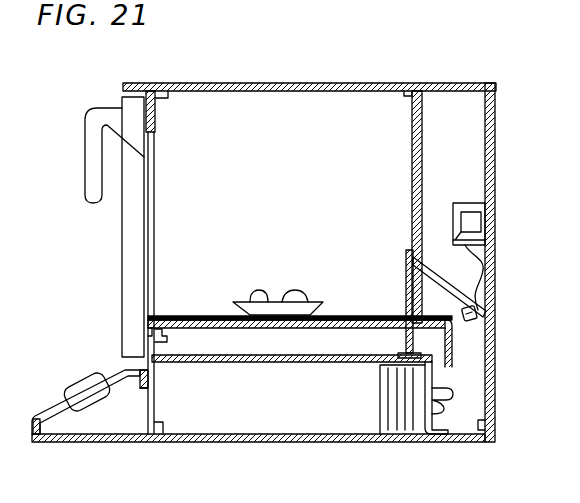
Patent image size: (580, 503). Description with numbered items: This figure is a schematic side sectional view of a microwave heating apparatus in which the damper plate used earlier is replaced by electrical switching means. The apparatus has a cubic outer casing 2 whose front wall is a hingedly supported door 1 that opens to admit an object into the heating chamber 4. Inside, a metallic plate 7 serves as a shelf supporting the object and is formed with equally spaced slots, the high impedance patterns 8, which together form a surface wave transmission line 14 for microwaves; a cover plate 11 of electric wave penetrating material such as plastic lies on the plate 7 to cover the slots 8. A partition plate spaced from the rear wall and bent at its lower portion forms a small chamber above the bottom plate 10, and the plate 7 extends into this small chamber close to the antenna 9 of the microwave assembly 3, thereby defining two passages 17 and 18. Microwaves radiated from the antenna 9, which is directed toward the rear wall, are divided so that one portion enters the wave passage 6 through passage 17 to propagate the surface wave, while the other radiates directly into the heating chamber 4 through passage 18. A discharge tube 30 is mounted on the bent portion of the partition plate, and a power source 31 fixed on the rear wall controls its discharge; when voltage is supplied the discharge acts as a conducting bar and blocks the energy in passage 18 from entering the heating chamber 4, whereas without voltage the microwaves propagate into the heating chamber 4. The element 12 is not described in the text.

The door 1 is at (133, 323).
The outer casing 2 is at (178, 442).
The microwave assembly 3 is at (385, 420).
The heating chamber 4 is at (298, 204).
The wave passage 6 is at (300, 354).
The metallic plate 7 is at (332, 327).
The high impedance patterns 8 is at (222, 328).
The antenna 9 is at (452, 394).
The bottom plate 10 is at (263, 363).
The cover plate 11 is at (355, 320).
The top wall 12 is at (302, 84).
The surface wave transmission line 14 is at (244, 328).
The passage 17 is at (423, 304).
The passage 18 is at (467, 343).
The discharge tube 30 is at (480, 318).
The power source 31 is at (472, 220).